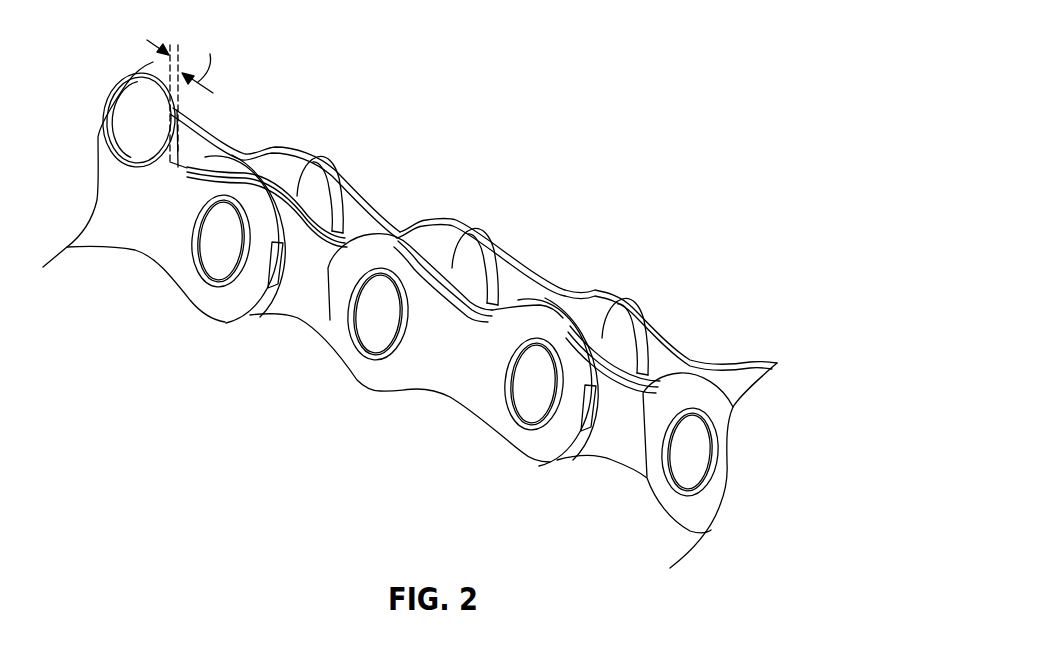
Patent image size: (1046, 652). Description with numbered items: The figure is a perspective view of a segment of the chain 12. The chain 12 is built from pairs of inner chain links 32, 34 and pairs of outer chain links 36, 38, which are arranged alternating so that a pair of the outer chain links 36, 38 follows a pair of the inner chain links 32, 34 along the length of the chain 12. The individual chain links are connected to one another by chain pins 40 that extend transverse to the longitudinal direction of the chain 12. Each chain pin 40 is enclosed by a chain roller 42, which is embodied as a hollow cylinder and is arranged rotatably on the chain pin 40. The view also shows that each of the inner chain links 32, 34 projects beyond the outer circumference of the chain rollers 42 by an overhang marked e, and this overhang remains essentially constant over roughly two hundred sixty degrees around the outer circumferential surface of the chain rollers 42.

The chain 12 is at (673, 350).
The inner chain link 32 is at (310, 283).
The inner chain link 34 is at (357, 227).
The outer chain link 36 is at (469, 370).
The outer chain link 38 is at (521, 287).
The chain pin 40 is at (223, 248).
The chain roller 42 is at (288, 180).